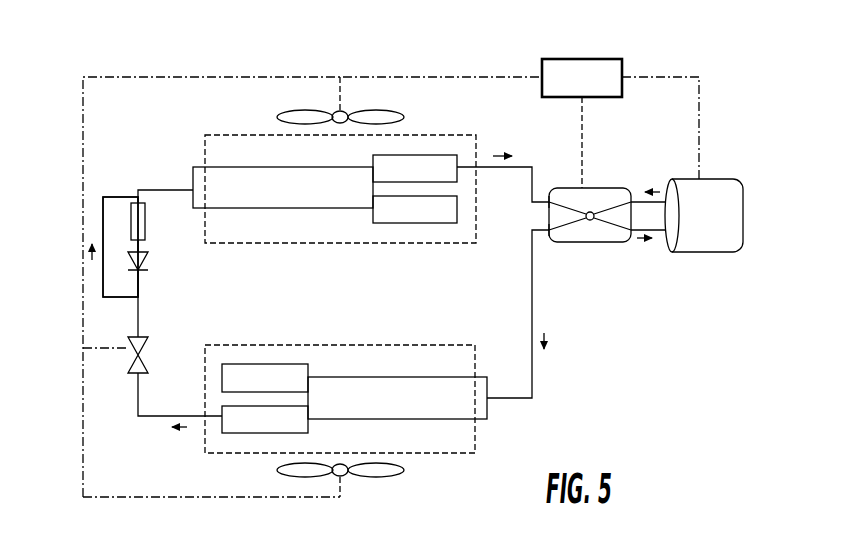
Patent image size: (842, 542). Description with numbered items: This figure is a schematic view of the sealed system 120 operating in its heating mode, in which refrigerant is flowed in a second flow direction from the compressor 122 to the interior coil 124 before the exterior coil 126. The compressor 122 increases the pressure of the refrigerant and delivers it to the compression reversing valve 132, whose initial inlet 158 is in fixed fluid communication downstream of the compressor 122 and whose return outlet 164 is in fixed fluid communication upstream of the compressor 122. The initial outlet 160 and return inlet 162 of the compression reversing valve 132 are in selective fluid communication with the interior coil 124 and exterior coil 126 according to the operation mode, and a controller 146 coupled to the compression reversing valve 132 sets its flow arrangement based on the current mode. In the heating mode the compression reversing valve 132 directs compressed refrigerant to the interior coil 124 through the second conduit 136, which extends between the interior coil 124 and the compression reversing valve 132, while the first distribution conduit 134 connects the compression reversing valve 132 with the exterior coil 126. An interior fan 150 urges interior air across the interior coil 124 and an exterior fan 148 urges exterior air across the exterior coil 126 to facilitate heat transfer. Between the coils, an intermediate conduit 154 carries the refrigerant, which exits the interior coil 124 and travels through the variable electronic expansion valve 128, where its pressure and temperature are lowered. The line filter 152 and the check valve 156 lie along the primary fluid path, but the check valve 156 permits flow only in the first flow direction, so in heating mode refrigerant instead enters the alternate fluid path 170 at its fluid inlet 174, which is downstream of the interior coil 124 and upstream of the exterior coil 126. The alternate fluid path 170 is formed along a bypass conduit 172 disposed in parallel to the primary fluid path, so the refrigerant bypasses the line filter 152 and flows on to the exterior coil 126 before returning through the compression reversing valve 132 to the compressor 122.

The sealed system 120 is at (739, 98).
The compressor 122 is at (745, 213).
The interior coil 124 is at (475, 433).
The exterior coil 126 is at (455, 135).
The variable electronic expansion valve 128 is at (150, 340).
The compression reversing valve 132 is at (597, 243).
The first distribution conduit 134 is at (528, 167).
The second conduit 136 is at (533, 375).
The controller 146 is at (566, 59).
The exterior fan 148 is at (295, 112).
The interior fan 150 is at (402, 471).
The line filter 152 is at (146, 222).
The intermediate conduit 154 is at (142, 418).
The check valve 156 is at (150, 262).
The initial inlet 158 is at (637, 189).
The initial outlet 160 is at (542, 243).
The return inlet 162 is at (548, 188).
The return outlet 164 is at (640, 252).
The alternate fluid path 170 is at (103, 283).
The bypass conduit 172 is at (75, 266).
The fluid inlet 174 is at (130, 300).